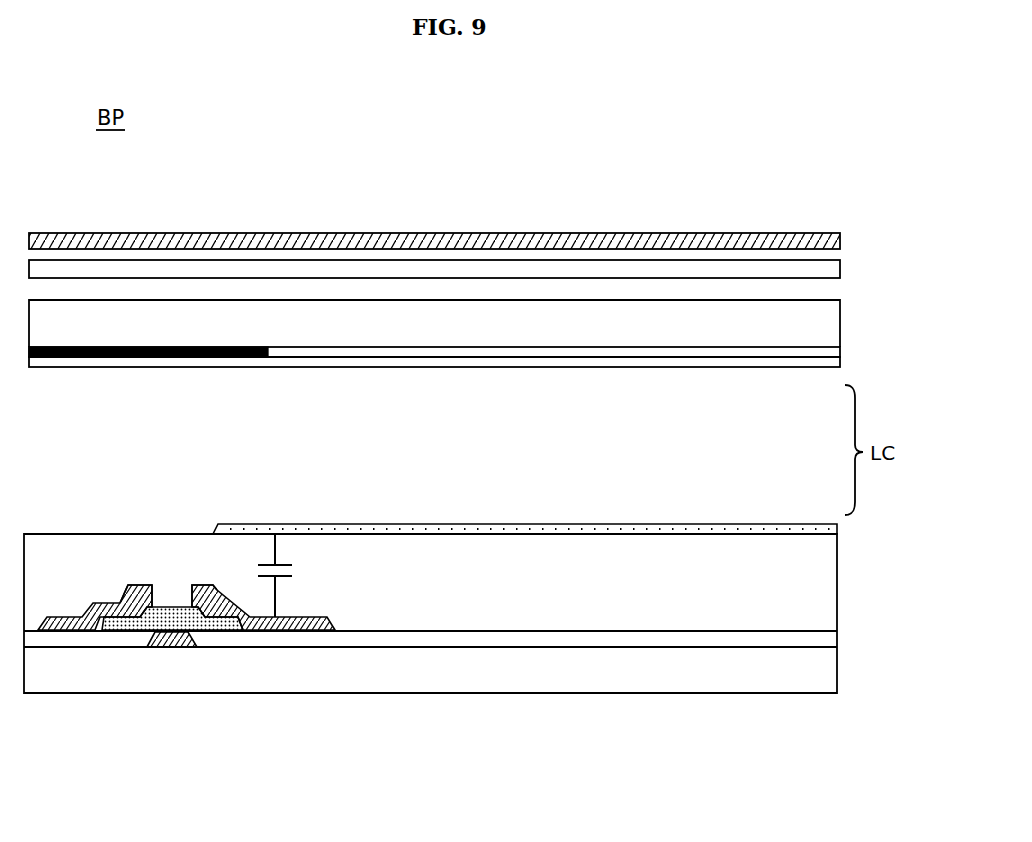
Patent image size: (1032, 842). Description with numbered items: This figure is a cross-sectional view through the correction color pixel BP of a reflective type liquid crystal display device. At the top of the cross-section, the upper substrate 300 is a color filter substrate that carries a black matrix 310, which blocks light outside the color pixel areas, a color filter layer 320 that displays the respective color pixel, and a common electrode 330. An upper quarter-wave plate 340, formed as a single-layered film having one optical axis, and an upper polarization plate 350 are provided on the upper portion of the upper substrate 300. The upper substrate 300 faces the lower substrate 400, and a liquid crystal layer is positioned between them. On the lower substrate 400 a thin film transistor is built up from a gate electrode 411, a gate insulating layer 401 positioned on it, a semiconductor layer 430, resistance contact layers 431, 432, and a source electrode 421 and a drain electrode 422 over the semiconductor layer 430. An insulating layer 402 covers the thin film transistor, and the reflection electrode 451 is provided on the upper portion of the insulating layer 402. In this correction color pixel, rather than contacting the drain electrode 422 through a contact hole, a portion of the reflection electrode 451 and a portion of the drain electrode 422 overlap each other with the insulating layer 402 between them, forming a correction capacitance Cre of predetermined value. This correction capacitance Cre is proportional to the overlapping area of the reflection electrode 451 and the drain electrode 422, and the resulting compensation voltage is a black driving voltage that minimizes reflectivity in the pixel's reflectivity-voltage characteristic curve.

The upper polarization plate 350 is at (840, 241).
The upper quarter-wave plate 340 is at (840, 270).
The upper substrate 300 is at (835, 327).
The color filter layer 320 is at (835, 352).
The common electrode 330 is at (835, 364).
The black matrix 310 is at (88, 358).
The lower substrate 400 is at (828, 677).
The gate insulating layer 401 is at (828, 645).
The insulating layer 402 is at (828, 587).
The reflection electrode 451 is at (535, 530).
The gate electrode 411 is at (170, 647).
The semiconductor layer 430 is at (165, 610).
The source electrode 421 is at (66, 620).
The resistance contact layer 431 is at (122, 614).
The drain electrode 422 is at (267, 631).
The resistance contact layer 432 is at (203, 603).
The correction capacitance Cre is at (296, 575).